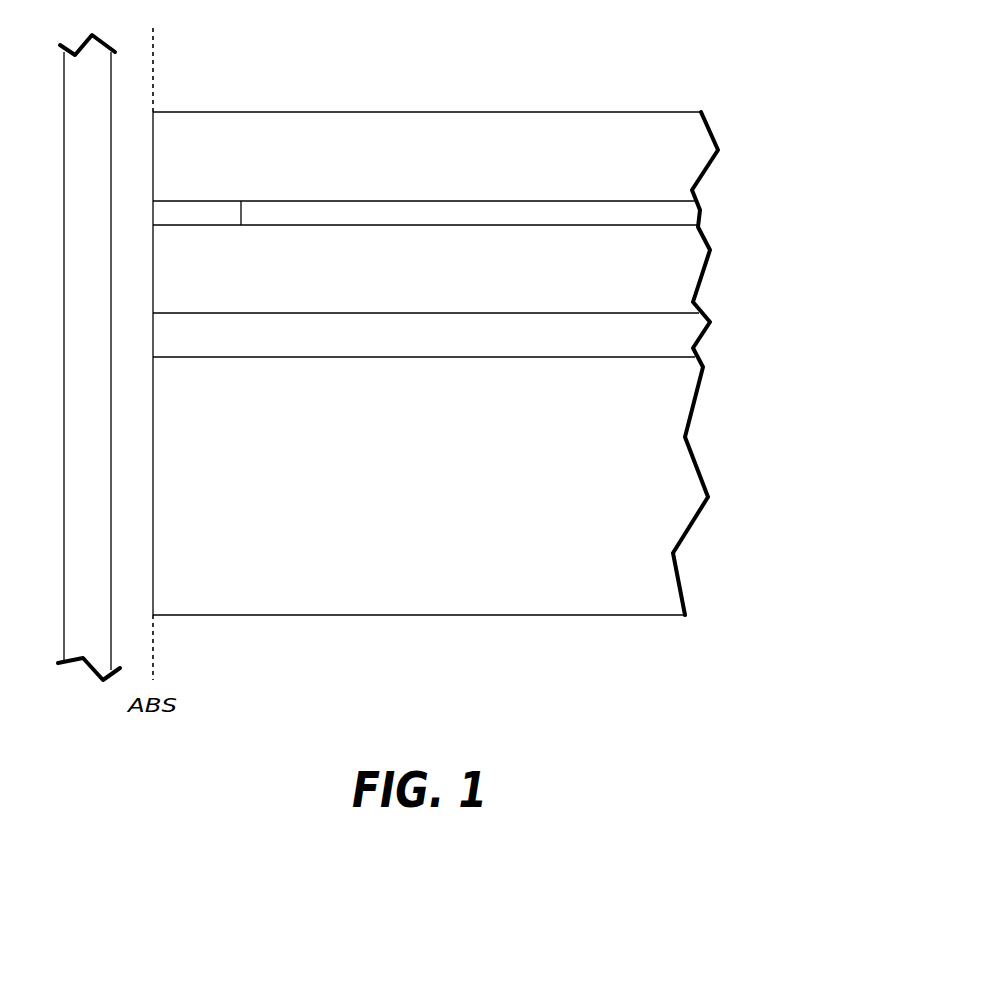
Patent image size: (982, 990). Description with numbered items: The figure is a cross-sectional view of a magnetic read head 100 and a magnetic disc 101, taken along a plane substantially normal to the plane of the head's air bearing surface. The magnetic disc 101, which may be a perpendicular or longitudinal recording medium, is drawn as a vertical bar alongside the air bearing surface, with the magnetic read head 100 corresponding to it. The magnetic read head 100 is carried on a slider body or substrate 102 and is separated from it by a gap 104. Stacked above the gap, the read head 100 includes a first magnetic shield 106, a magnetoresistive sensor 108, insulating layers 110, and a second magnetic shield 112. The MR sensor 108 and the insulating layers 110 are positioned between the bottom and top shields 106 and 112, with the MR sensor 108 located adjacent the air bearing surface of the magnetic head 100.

The magnetic read head 100 is at (491, 173).
The magnetic disc 101 is at (106, 262).
The slider body (substrate) 102 is at (240, 492).
The gap 104 is at (270, 348).
The first magnetic shield 106 is at (270, 280).
The magnetoresistive (MR) sensor 108 is at (189, 213).
The insulating layers 110 is at (343, 212).
The second magnetic shield 112 is at (241, 163).